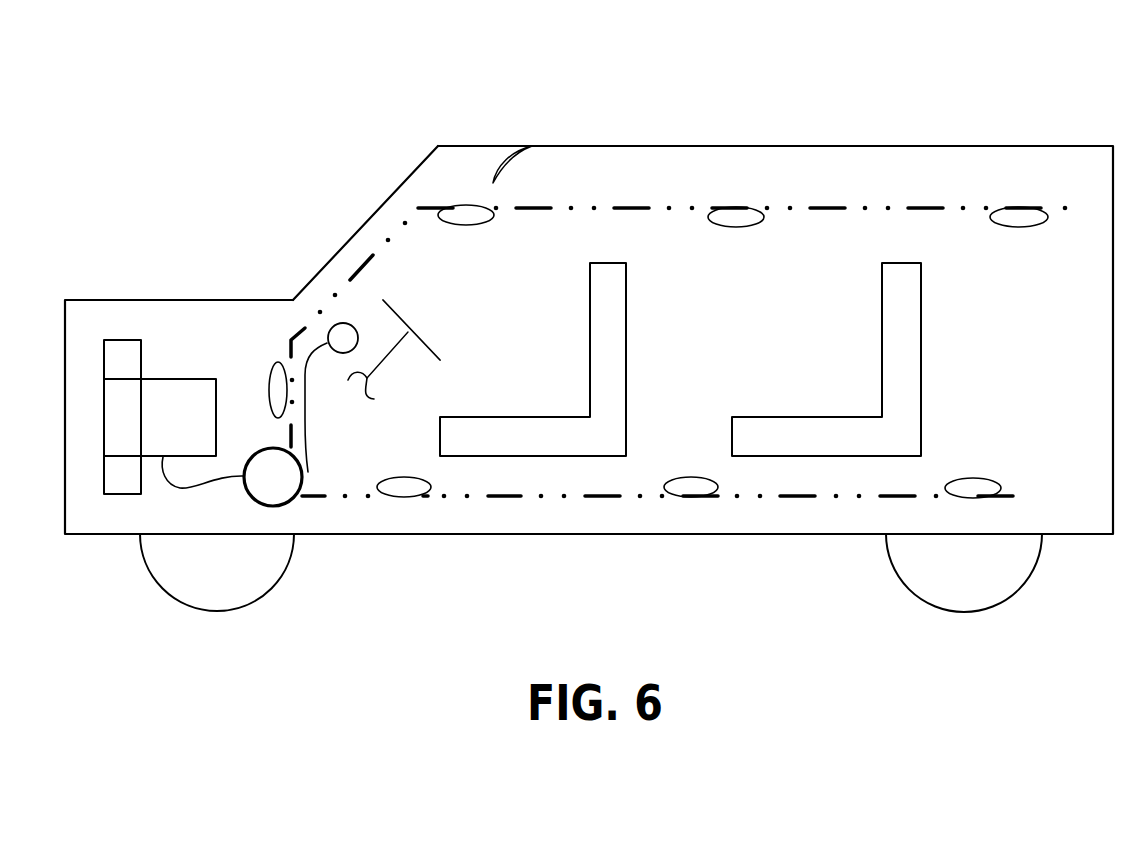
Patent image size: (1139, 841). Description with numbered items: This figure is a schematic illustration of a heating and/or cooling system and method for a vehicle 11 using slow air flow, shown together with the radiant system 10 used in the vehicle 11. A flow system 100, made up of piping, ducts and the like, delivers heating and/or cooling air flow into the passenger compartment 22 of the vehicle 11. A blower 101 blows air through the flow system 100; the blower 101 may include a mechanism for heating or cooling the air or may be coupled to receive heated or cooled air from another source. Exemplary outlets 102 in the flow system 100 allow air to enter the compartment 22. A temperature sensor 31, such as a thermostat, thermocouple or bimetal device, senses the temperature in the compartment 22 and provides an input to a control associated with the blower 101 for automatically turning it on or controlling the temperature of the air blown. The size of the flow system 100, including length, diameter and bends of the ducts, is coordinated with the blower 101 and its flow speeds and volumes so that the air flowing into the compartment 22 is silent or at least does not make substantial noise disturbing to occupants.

The radiant system 10 is at (362, 246).
The vehicle 11 is at (410, 162).
The compartment 22 is at (333, 272).
The temperature sensor 31 is at (347, 325).
The flow system 100 is at (537, 207).
The blower 101 is at (272, 505).
The outlet 102 is at (402, 496).